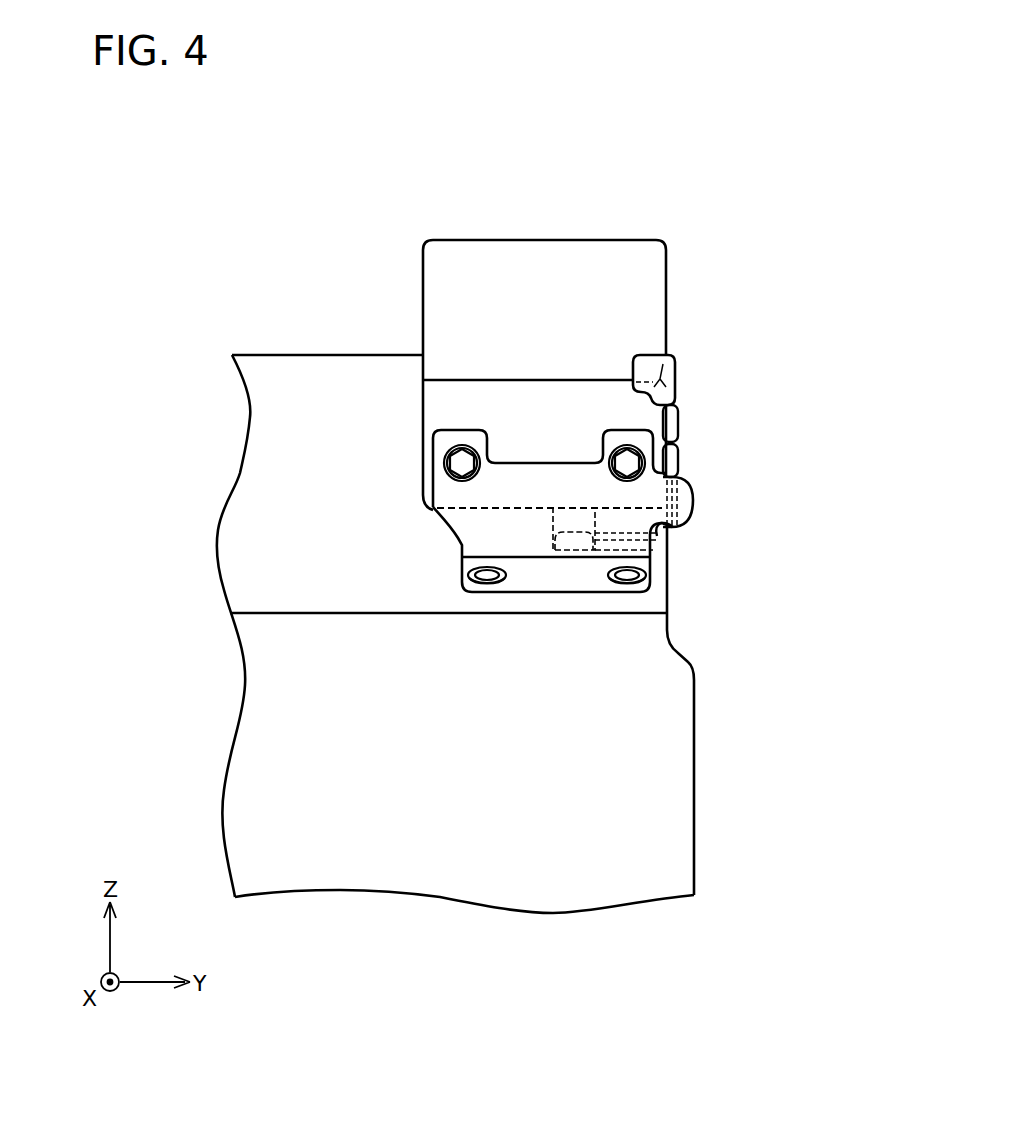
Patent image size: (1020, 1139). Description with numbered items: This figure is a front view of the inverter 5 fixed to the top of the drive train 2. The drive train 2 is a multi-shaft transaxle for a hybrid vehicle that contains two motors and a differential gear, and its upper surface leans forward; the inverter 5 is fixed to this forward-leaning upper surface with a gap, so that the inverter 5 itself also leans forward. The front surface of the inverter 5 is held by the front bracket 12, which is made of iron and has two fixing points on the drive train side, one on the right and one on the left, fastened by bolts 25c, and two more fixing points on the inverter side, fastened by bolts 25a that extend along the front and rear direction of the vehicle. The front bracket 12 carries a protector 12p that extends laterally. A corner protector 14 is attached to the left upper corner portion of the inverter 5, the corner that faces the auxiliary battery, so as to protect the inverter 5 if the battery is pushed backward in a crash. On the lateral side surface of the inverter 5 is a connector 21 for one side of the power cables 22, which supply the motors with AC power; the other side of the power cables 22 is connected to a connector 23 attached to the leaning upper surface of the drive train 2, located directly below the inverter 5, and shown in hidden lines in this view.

The drive train 2 is at (668, 770).
The inverter 5 is at (503, 272).
The front bracket 12 is at (483, 518).
The protector 12p is at (682, 487).
The corner protector 14 is at (660, 366).
The connector 21 is at (670, 428).
The power cables 22 is at (665, 530).
The connector 23 is at (583, 543).
The bolts 25a is at (622, 462).
The bolts 25c is at (478, 570).